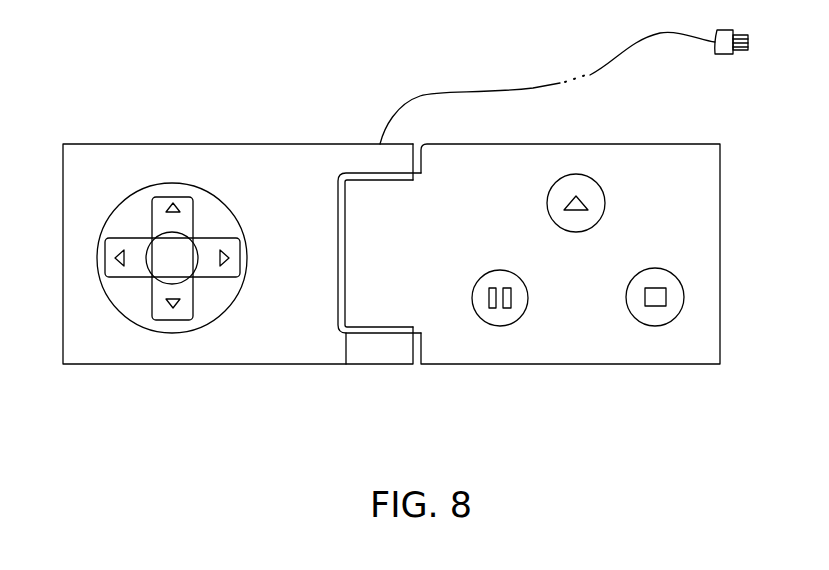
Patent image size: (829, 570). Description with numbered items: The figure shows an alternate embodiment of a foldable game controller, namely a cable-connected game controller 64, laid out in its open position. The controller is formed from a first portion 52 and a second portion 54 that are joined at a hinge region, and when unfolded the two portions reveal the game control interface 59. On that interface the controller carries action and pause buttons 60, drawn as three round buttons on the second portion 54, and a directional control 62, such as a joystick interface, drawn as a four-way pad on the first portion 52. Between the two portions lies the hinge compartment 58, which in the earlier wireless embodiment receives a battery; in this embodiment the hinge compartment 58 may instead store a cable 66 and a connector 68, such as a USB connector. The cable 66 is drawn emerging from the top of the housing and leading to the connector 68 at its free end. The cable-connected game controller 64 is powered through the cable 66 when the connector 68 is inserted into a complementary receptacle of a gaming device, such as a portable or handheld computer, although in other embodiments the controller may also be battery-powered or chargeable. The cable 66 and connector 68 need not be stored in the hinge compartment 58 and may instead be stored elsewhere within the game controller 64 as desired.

The first portion 52 is at (233, 365).
The second portion 54 is at (547, 365).
The hinge compartment 58 is at (380, 303).
The game control interface 59 is at (306, 157).
The action and pause buttons 60 is at (605, 198).
The directional control 62 is at (147, 322).
The cable-connected game controller 64 is at (419, 281).
The cable 66 is at (475, 90).
The connector 68 is at (723, 54).